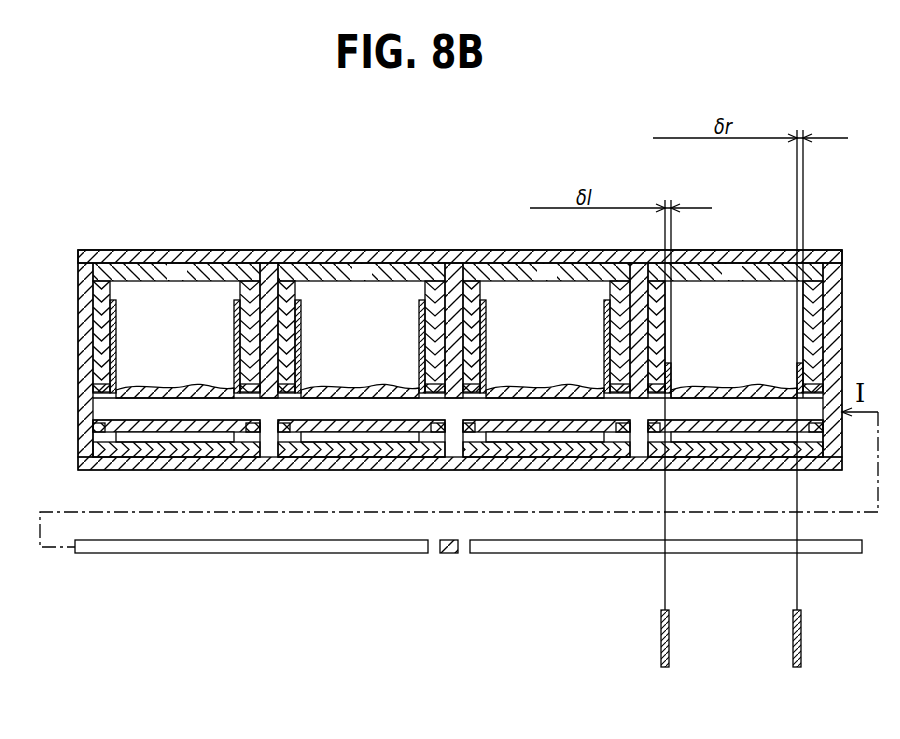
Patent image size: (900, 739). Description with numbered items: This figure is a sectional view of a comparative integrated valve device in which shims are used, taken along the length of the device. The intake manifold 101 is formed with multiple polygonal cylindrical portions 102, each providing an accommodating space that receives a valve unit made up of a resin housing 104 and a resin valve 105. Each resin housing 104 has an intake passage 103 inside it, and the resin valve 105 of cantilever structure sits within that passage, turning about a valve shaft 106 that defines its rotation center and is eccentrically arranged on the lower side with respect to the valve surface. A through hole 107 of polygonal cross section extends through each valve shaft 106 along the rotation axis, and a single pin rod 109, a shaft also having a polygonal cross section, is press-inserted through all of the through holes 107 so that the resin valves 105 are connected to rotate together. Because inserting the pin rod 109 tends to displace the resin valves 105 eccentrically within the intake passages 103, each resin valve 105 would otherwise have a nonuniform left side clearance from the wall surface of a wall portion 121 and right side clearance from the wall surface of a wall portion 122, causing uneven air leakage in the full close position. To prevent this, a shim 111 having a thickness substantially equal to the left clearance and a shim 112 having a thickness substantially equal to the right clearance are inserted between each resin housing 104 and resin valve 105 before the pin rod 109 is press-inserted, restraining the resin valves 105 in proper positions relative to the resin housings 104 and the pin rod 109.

The intake manifold 101 is at (460, 334).
The polygonal cylindrical portion 102 is at (460, 217).
The intake passage 103 is at (379, 295).
The resin housing 104 is at (458, 219).
The resin valve 105 is at (522, 285).
The valve shaft 106 is at (447, 443).
The through hole 107 is at (458, 456).
The pin rod 109 is at (468, 580).
The shim 111 is at (390, 443).
The shim 112 is at (493, 408).
The wall portion 121 is at (71, 327).
The wall portion 122 is at (454, 294).